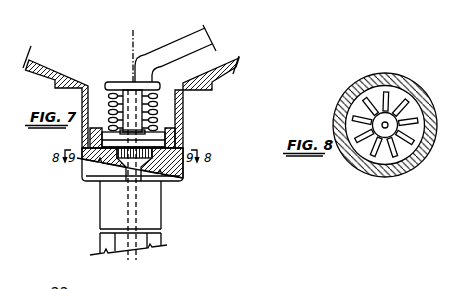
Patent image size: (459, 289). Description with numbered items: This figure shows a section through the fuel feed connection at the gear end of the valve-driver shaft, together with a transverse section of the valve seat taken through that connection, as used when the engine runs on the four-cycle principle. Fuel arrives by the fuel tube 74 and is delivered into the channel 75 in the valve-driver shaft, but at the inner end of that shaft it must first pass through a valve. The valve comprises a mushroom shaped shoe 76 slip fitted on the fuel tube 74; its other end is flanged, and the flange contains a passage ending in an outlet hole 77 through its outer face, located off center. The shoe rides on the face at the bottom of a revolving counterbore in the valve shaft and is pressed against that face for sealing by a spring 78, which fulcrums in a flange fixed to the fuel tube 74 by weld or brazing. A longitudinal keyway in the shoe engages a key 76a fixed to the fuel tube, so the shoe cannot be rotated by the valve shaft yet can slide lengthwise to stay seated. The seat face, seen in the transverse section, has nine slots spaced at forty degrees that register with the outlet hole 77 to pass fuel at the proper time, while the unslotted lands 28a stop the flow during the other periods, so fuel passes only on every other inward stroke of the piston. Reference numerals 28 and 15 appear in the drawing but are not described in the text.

In FIG. 7, the fuel tube 74 is at (170, 43).
In FIG. 7, the channel in the valve-driver shaft 75 is at (125, 217).
In FIG. 7, the mushroom shaped shoe 76 is at (181, 131).
In FIG. 7, the key 76a is at (118, 86).
In FIG. 7, the outlet hole 77 is at (106, 127).
In FIG. 7, the spring 78 is at (156, 102).
In FIG. 7, the housing 28 is at (157, 240).
In FIG. 8, the housing 28 is at (385, 125).
In FIG. 8, the unslotted lands 28a is at (358, 190).
In FIG. 8, the center pin 15 is at (386, 124).